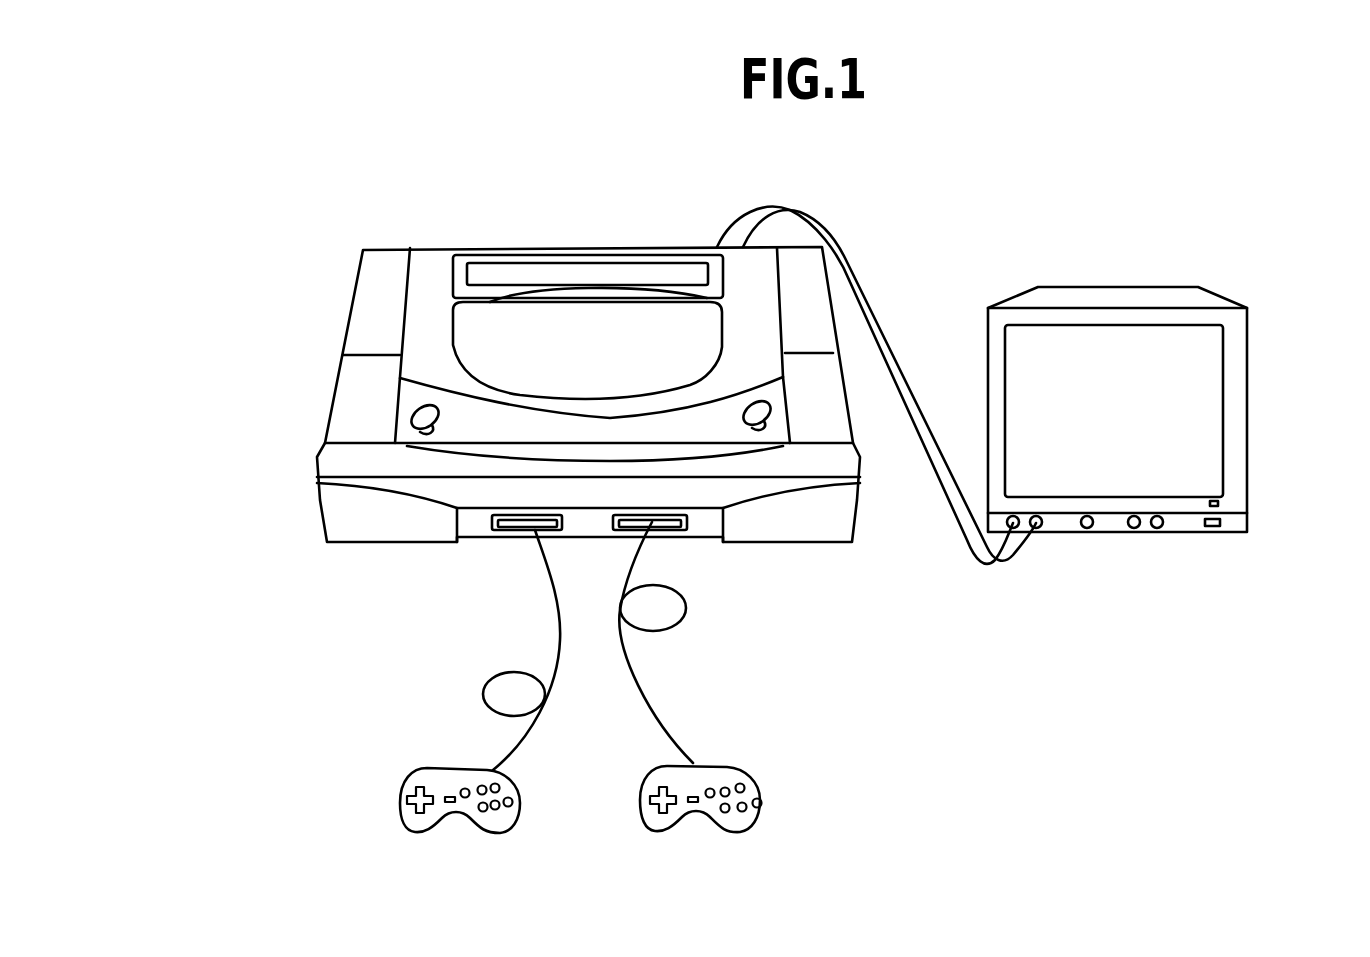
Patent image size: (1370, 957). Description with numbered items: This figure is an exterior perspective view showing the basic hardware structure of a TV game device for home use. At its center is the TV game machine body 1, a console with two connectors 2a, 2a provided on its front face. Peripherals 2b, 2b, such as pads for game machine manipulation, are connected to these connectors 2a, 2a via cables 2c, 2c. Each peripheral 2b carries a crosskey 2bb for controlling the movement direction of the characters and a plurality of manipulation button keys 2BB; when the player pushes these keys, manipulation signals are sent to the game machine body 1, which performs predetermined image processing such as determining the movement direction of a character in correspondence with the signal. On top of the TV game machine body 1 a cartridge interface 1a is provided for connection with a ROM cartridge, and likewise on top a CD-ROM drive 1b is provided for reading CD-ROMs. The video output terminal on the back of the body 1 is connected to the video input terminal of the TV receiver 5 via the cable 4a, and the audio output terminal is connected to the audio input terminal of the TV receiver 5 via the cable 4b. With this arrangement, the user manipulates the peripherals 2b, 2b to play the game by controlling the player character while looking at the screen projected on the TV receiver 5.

The TV game machine body 1 is at (318, 463).
The cartridge interface 1a is at (498, 268).
The CD-ROM drive 1b is at (673, 313).
The connector 2a is at (500, 526).
The peripheral 2b is at (410, 830).
The crosskey 2bb is at (420, 813).
The manipulation button keys 2BB is at (509, 810).
The cable 2c is at (480, 697).
The cable 4a is at (890, 303).
The cable 4b is at (918, 480).
The TV receiver 5 is at (1248, 424).